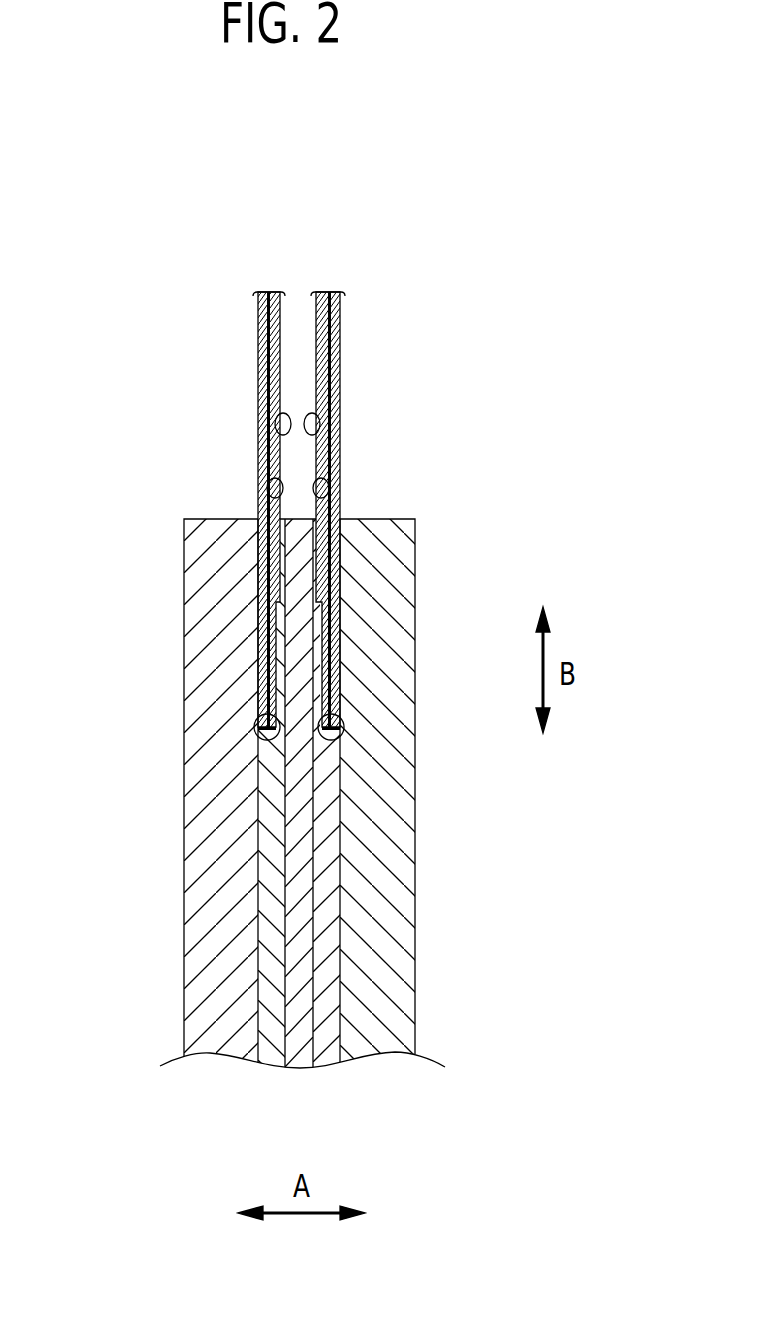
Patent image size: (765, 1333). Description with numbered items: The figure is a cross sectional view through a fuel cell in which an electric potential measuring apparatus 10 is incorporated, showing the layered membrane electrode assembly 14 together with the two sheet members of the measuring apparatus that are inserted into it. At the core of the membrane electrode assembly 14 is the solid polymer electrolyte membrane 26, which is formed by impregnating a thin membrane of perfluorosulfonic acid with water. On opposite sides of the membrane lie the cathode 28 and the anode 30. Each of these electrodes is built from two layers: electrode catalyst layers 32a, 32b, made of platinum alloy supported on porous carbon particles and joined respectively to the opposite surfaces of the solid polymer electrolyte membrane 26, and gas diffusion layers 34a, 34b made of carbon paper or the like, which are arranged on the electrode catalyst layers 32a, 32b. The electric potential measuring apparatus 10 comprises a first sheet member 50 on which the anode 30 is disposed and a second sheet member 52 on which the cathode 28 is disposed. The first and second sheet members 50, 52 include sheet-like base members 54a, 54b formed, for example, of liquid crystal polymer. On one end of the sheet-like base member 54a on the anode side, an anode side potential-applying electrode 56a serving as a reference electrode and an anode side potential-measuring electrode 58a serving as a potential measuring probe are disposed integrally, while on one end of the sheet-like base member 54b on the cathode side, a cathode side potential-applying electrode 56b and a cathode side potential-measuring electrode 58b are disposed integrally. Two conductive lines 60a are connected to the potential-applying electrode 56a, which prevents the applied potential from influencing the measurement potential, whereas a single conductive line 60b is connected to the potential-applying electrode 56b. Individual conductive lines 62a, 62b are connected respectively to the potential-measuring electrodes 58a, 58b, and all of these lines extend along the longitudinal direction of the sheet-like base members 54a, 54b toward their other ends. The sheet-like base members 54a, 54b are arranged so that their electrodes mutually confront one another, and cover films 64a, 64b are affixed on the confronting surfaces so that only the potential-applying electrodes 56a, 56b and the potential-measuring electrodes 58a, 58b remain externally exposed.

The electric potential measuring apparatus 10 is at (299, 464).
The membrane electrode assembly 14 is at (300, 619).
The solid polymer electrolyte membrane 26 is at (297, 957).
The cathode 28 is at (435, 799).
The anode 30 is at (163, 799).
The electrode catalyst layer 32a is at (330, 903).
The electrode catalyst layer 32b is at (270, 903).
The gas diffusion layer 34a is at (390, 860).
The gas diffusion layer 34b is at (207, 860).
The first sheet member 50 is at (194, 491).
The second sheet member 52 is at (381, 491).
The sheet-like base member 54a is at (257, 349).
The sheet-like base member 54b is at (340, 349).
The anode side potential-applying electrode 56a is at (195, 754).
The cathode side potential-applying electrode 56b is at (403, 754).
The anode side potential-measuring electrode 58a is at (262, 740).
The cathode side potential-measuring electrode 58b is at (336, 740).
The conductive lines 60a is at (190, 498).
The conductive line 60b is at (406, 498).
The conductive line 62a is at (258, 506).
The conductive line 62b is at (340, 505).
The cover film 64a is at (258, 418).
The cover film 64b is at (340, 425).